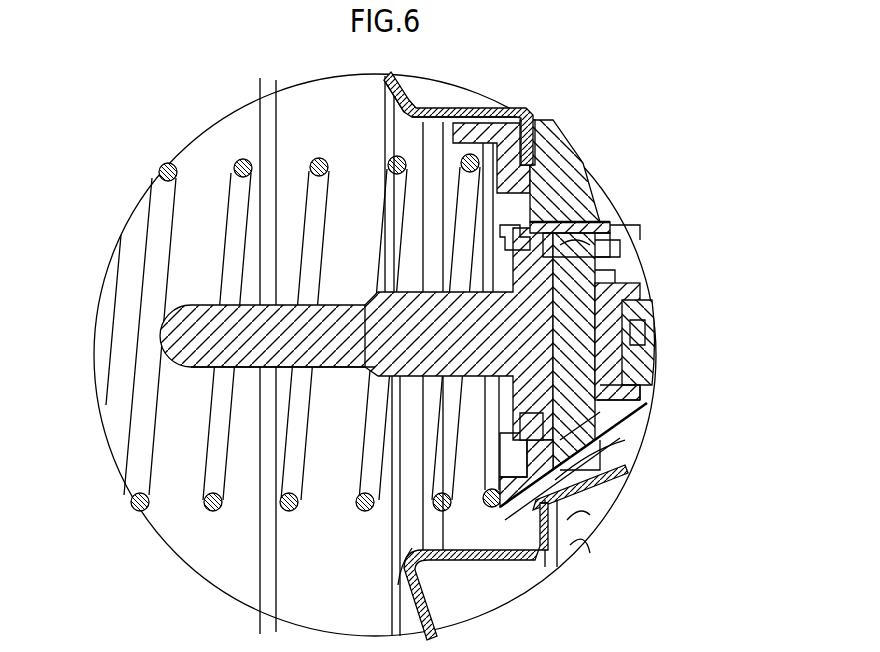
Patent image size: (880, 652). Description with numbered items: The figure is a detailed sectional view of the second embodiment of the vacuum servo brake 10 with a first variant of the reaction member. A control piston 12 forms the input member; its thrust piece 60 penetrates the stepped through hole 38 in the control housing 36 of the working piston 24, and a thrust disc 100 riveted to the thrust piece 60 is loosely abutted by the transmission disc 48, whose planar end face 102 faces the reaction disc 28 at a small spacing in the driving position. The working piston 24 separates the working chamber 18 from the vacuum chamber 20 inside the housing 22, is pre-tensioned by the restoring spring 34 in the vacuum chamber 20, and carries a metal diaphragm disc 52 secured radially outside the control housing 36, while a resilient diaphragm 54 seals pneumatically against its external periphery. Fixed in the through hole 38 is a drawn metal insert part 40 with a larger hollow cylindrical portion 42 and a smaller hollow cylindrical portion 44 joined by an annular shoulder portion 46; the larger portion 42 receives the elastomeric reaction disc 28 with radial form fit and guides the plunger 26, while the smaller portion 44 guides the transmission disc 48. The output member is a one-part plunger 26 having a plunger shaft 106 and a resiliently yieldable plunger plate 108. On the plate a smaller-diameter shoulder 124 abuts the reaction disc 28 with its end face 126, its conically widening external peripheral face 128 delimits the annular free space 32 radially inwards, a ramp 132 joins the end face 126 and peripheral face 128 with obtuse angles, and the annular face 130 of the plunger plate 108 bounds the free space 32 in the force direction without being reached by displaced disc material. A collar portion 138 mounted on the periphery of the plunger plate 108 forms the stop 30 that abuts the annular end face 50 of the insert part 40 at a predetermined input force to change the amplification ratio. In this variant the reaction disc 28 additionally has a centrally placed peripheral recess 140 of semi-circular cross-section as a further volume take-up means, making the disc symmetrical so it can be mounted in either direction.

The vacuum servo brake 10 is at (158, 547).
The control piston 12 is at (660, 322).
The working chamber 18 is at (437, 97).
The vacuum chamber 20 is at (300, 120).
The housing 22 is at (577, 518).
The working piston 24 is at (462, 562).
The plunger 26 is at (340, 370).
The reaction disc 28 is at (598, 247).
The stop 30 is at (562, 210).
The free space 32 is at (577, 222).
The restoring spring 34 is at (243, 158).
The control housing 36 is at (565, 182).
The through hole 38 is at (637, 448).
The insert part 40 is at (610, 483).
The hollow cylindrical portion 42 is at (607, 500).
The hollow cylindrical portion 44 is at (600, 407).
The annular shoulder portion 46 is at (630, 236).
The transmission disc 48 is at (605, 392).
The end face 50 is at (513, 448).
The diaphragm disc 52 is at (395, 100).
The diaphragm 54 is at (472, 108).
The thrust piece 60 is at (660, 338).
The thrust disc 100 is at (647, 360).
The end face 102 is at (640, 295).
The plunger shaft 106 is at (345, 330).
The plunger plate 108 is at (528, 277).
The shoulder 124 is at (590, 512).
The end face 126 is at (585, 282).
The external peripheral face 128 is at (560, 236).
The annular face 130 is at (547, 560).
The ramp 132 is at (640, 437).
The collar portion 138 is at (545, 165).
The peripheral recess 140 is at (627, 463).